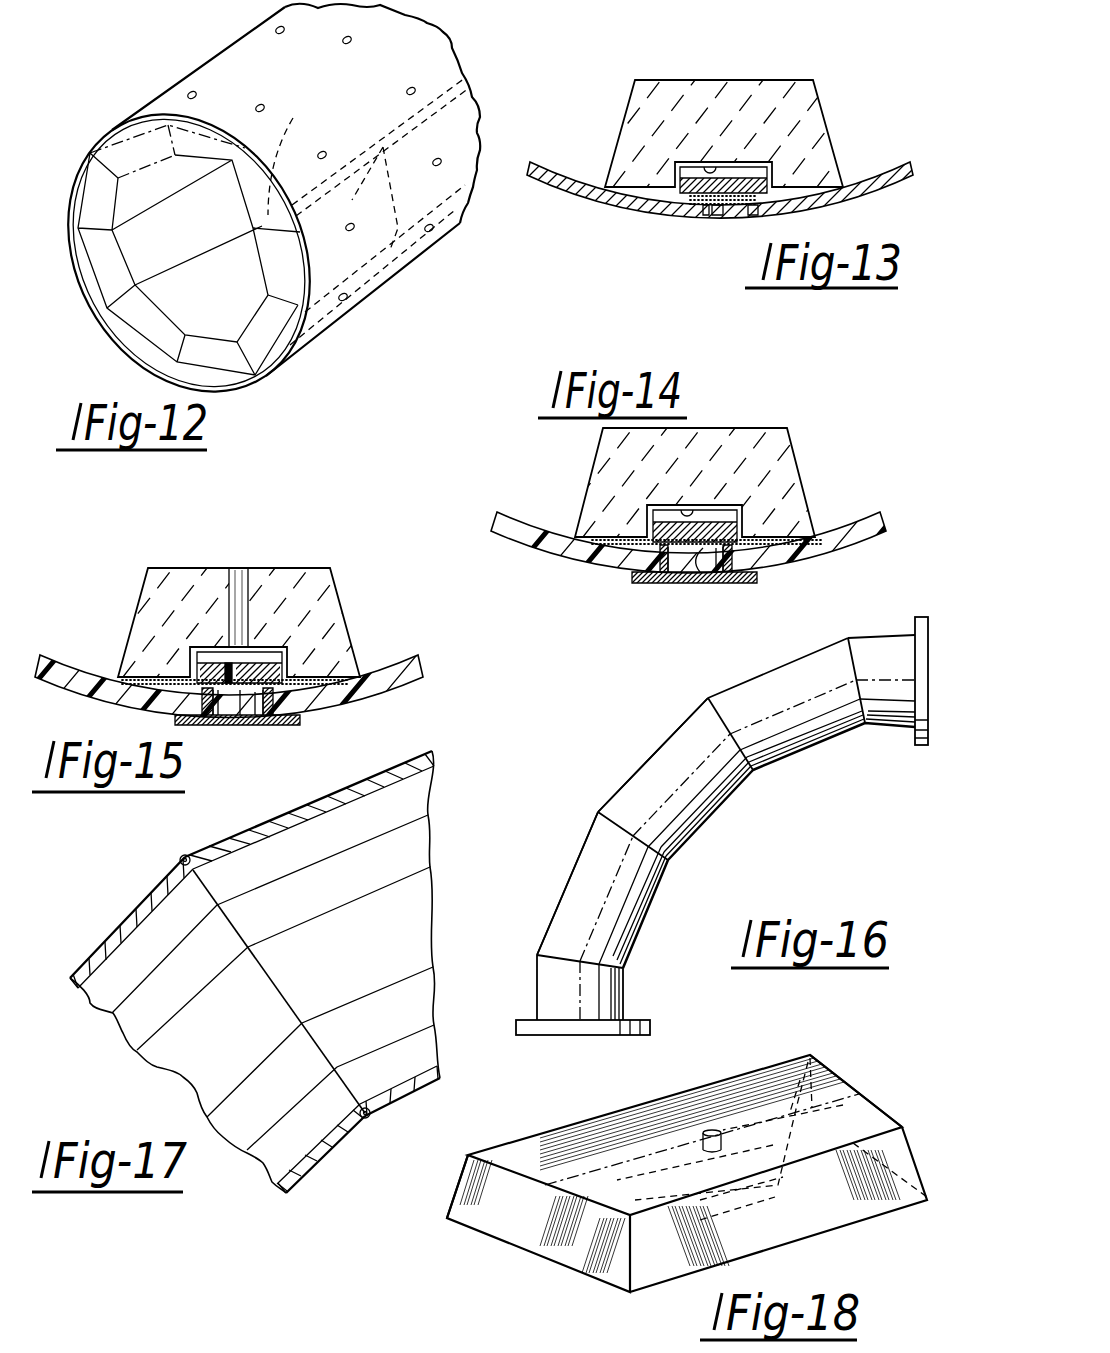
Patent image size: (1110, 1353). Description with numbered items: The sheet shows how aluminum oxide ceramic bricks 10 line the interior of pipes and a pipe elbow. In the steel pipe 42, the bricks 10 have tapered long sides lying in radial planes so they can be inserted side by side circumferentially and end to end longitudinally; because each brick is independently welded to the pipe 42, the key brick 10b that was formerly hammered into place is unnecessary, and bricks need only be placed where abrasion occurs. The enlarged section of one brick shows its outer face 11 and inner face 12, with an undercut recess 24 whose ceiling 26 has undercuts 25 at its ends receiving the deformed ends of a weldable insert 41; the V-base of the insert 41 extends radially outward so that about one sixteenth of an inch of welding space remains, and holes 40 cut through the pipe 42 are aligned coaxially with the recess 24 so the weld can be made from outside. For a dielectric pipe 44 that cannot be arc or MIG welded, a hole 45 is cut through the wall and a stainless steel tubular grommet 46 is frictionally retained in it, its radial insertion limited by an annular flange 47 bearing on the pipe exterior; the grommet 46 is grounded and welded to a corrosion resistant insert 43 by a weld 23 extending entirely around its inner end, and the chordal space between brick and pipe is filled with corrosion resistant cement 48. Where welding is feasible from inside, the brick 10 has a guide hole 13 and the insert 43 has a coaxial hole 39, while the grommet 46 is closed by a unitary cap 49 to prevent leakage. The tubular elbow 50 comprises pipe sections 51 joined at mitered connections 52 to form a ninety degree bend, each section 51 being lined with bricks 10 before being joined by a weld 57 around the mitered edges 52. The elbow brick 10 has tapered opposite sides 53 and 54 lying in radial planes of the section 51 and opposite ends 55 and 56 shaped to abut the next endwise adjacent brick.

In FIG. 12, the ceramic brick 10 is at (108, 262).
In FIG. 14, the ceramic brick 10 is at (800, 465).
In FIG. 15, the ceramic brick 10 is at (263, 570).
In FIG. 17, the ceramic brick 10 is at (322, 846).
In FIG. 18, the ceramic brick 10 is at (664, 1153).
In FIG. 12, the key brick 10b is at (296, 120).
In FIG. 12, the outer face 11 is at (250, 313).
In FIG. 15, the outer face 11 is at (168, 568).
In FIG. 12, the inner face 12 is at (292, 365).
In FIG. 15, the inner face 12 is at (143, 708).
In FIG. 12, the guide hole 13 is at (362, 250).
In FIG. 15, the guide hole 13 is at (240, 592).
In FIG. 18, the guide hole 13 is at (700, 1130).
In FIG. 13, the weld 23 is at (748, 212).
In FIG. 14, the weld 23 is at (763, 528).
In FIG. 13, the recess 24 is at (798, 208).
In FIG. 14, the recess 24 is at (645, 548).
In FIG. 18, the undercuts 25 is at (815, 1054).
In FIG. 13, the ceiling 26 is at (715, 167).
In FIG. 14, the ceiling 26 is at (687, 512).
In FIG. 15, the hole 39 is at (237, 658).
In FIG. 12, the holes 40 is at (353, 225).
In FIG. 13, the holes 40 is at (732, 215).
In FIG. 13, the insert 41 is at (750, 173).
In FIG. 12, the pipe 42 is at (297, 348).
In FIG. 13, the pipe 42 is at (570, 183).
In FIG. 14, the insert 43 is at (687, 542).
In FIG. 15, the insert 43 is at (280, 662).
In FIG. 14, the pipe 44 is at (860, 552).
In FIG. 15, the pipe 44 is at (387, 672).
In FIG. 14, the hole 45 is at (723, 565).
In FIG. 15, the hole 45 is at (218, 725).
In FIG. 14, the tubular grommet 46 is at (703, 565).
In FIG. 15, the tubular grommet 46 is at (263, 725).
In FIG. 14, the annular flange 47 is at (745, 582).
In FIG. 15, the annular flange 47 is at (283, 725).
In FIG. 14, the cement 48 is at (600, 562).
In FIG. 15, the cap 49 is at (242, 725).
In FIG. 16, the tubular elbow 50 is at (717, 812).
In FIG. 17, the tubular elbow 50 is at (230, 977).
In FIG. 16, the pipe sections 51 is at (632, 793).
In FIG. 17, the pipe sections 51 is at (117, 927).
In FIG. 16, the mitered connections 52 is at (727, 720).
In FIG. 17, the mitered connections 52 is at (273, 975).
In FIG. 18, the side 53 is at (452, 1212).
In FIG. 18, the side 54 is at (639, 1250).
In FIG. 18, the end 55 is at (520, 1232).
In FIG. 18, the end 56 is at (877, 1100).
In FIG. 17, the weld 57 is at (183, 855).